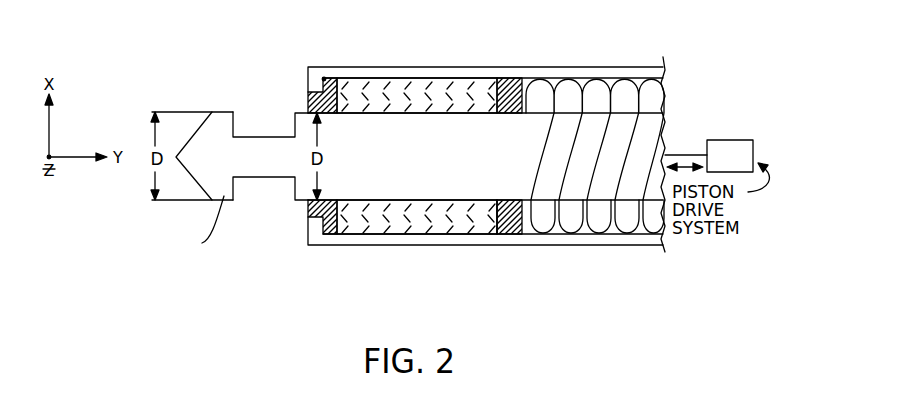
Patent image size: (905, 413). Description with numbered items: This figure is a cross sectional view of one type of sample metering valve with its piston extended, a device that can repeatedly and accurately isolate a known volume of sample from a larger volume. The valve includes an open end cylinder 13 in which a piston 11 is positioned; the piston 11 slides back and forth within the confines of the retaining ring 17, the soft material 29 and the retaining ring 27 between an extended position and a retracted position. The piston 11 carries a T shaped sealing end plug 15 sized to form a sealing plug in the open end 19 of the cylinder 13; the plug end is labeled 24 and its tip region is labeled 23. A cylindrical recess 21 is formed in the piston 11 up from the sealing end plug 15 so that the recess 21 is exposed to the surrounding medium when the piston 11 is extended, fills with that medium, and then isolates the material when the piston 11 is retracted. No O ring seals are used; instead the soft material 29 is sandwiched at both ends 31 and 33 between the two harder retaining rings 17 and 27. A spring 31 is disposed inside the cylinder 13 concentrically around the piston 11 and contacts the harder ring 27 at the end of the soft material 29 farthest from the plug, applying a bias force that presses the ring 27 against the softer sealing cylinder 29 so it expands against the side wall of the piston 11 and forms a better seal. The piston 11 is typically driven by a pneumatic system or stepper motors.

The piston 11 is at (405, 162).
The open end cylinder 13 is at (560, 67).
The T shaped sealing end plug 15 is at (212, 112).
The retaining ring 17 is at (325, 80).
The open end of the cylinder 19 is at (293, 216).
The cylindrical recess 21 is at (250, 124).
The conical tip 23 is at (173, 160).
The plug assembly 24 is at (181, 84).
The retaining ring 27 is at (500, 80).
The soft material 29 is at (382, 83).
The spring 31 is at (562, 223).
The end of soft material 33 is at (497, 227).